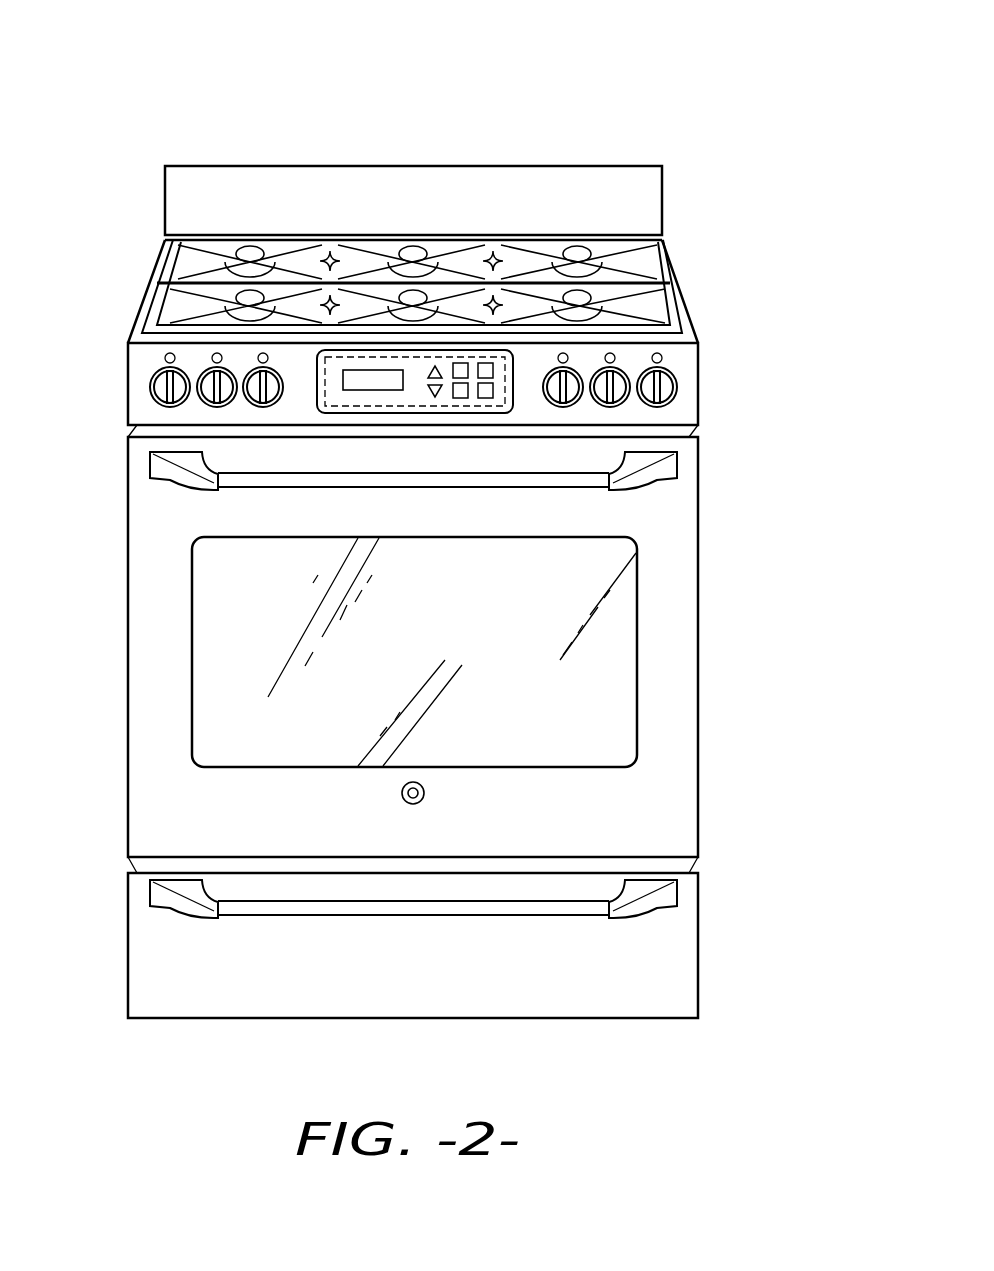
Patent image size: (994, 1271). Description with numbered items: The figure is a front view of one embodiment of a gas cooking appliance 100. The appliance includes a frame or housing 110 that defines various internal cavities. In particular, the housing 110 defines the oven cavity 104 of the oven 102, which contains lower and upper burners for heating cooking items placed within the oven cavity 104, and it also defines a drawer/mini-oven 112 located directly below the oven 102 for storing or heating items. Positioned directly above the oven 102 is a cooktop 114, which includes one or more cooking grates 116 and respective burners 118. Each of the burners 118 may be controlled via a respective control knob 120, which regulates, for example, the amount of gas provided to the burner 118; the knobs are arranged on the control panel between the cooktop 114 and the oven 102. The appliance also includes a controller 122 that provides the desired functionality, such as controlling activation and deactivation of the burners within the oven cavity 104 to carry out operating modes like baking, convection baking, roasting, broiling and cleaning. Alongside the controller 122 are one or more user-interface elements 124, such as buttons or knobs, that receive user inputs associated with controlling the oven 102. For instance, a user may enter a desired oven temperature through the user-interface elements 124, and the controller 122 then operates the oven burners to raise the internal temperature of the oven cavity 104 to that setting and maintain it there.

The gas cooking appliance 100 is at (624, 98).
The oven 102 is at (664, 650).
The oven cavity 104 is at (665, 735).
The housing 110 is at (127, 633).
The drawer/mini-oven 112 is at (670, 960).
The cooktop 114 is at (626, 272).
The cooking grate 116 is at (188, 258).
The burner 118 is at (178, 300).
The control knob 120 is at (165, 396).
The controller 122 is at (365, 352).
The user-interface element 124 is at (460, 364).